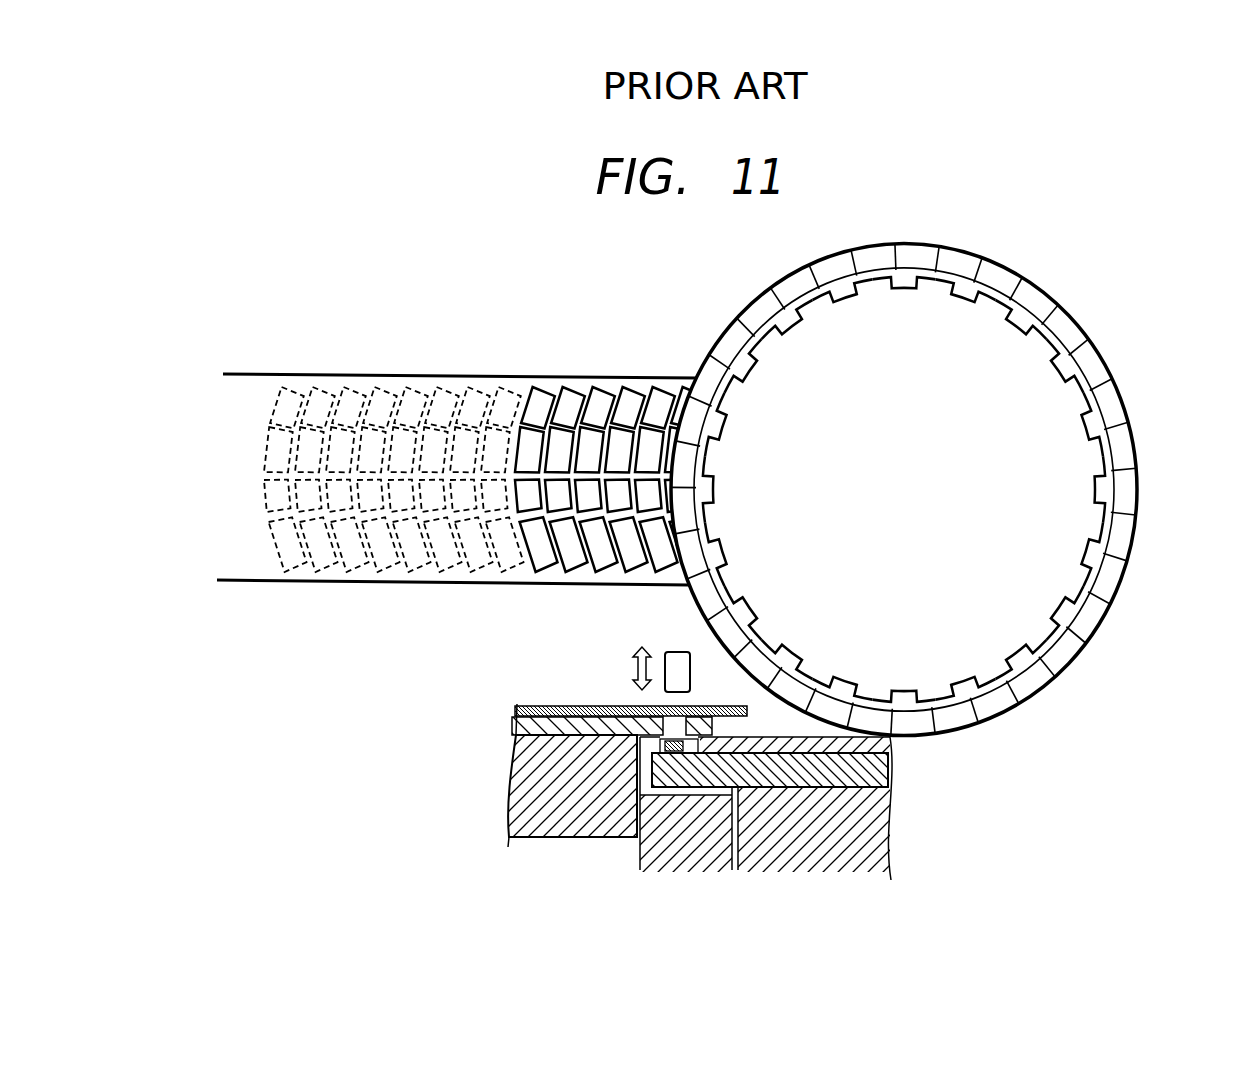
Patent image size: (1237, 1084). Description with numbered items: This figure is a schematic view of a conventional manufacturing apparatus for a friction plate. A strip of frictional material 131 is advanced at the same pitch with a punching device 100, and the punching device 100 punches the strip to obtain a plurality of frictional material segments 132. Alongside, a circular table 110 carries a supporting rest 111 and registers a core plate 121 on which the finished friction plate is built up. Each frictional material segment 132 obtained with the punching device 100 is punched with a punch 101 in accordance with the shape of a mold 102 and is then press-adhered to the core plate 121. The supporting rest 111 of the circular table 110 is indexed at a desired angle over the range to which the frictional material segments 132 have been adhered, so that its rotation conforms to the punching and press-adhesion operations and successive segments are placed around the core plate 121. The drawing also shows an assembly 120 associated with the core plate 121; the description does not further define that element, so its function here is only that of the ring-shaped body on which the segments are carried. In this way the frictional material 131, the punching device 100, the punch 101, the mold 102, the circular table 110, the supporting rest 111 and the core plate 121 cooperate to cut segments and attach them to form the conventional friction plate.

The punching device 100 is at (586, 879).
The punch 101 is at (678, 662).
The mold 102 is at (588, 716).
The circular table 110 is at (835, 904).
The supporting rest 111 is at (893, 770).
The rotary drum 120 is at (1054, 252).
The core plate 121 is at (1100, 483).
The frictional material 131 is at (425, 380).
The frictional material segment 132 is at (668, 402).